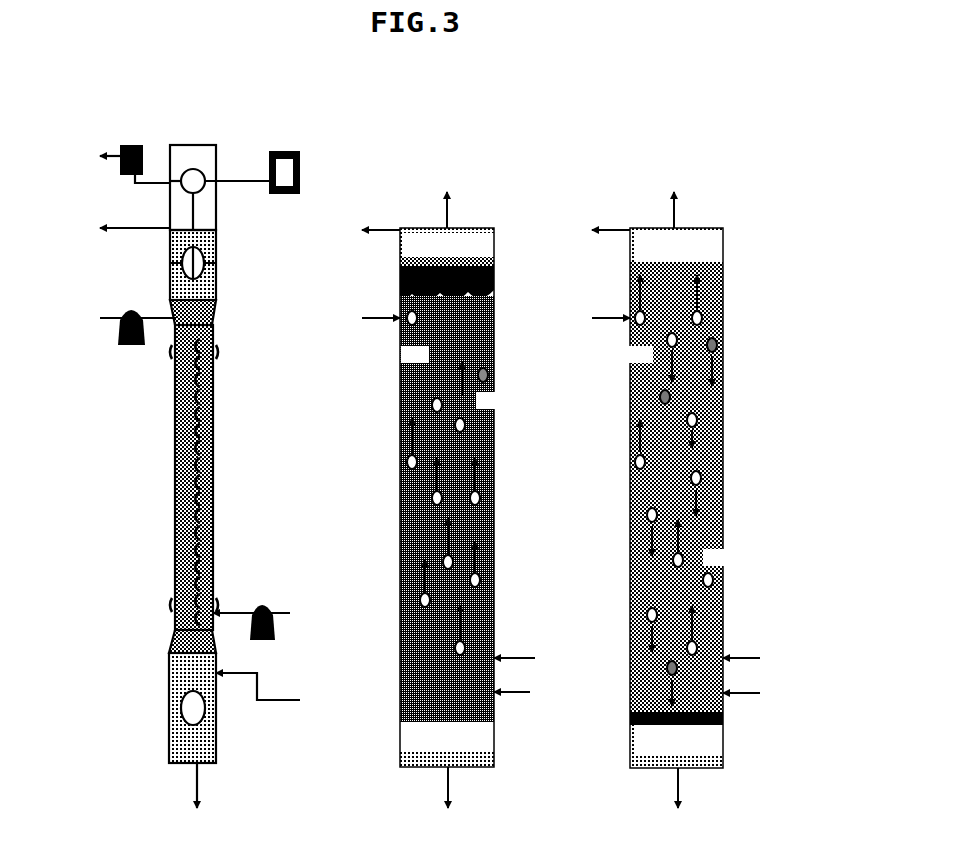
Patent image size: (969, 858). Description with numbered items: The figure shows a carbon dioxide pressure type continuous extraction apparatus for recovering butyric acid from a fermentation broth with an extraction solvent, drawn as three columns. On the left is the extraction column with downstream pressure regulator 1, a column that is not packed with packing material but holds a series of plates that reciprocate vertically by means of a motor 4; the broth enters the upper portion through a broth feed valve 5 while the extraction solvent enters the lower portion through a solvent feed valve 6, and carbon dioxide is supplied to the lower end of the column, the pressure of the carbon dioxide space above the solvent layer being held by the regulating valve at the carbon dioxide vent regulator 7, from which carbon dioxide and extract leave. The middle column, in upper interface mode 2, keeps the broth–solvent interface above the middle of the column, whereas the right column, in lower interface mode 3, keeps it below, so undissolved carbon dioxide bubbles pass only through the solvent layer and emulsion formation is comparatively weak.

The extraction column with downstream pressure regulator 1 is at (182, 432).
The extraction column in upper interface mode 2 is at (435, 442).
The extraction column in lower interface mode 3 is at (677, 442).
The motor 4 is at (252, 172).
The broth feed valve 5 is at (108, 327).
The solvent feed valve 6 is at (282, 615).
The CO2 vent regulator 7 is at (102, 160).